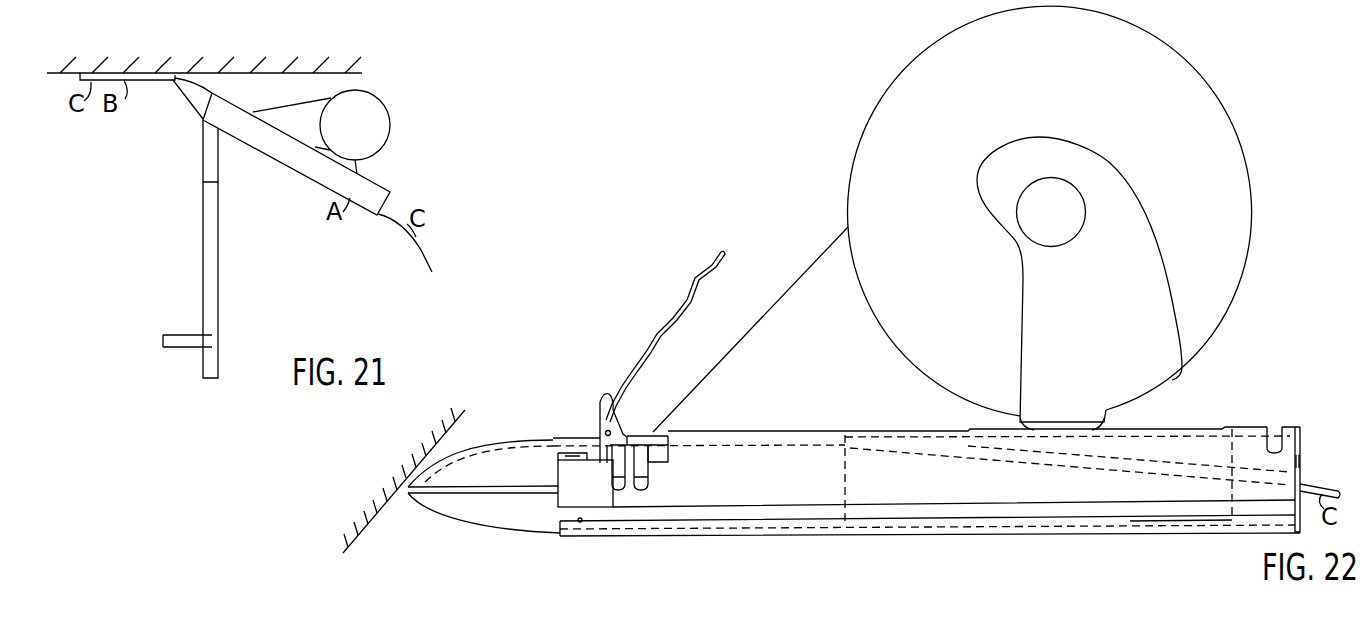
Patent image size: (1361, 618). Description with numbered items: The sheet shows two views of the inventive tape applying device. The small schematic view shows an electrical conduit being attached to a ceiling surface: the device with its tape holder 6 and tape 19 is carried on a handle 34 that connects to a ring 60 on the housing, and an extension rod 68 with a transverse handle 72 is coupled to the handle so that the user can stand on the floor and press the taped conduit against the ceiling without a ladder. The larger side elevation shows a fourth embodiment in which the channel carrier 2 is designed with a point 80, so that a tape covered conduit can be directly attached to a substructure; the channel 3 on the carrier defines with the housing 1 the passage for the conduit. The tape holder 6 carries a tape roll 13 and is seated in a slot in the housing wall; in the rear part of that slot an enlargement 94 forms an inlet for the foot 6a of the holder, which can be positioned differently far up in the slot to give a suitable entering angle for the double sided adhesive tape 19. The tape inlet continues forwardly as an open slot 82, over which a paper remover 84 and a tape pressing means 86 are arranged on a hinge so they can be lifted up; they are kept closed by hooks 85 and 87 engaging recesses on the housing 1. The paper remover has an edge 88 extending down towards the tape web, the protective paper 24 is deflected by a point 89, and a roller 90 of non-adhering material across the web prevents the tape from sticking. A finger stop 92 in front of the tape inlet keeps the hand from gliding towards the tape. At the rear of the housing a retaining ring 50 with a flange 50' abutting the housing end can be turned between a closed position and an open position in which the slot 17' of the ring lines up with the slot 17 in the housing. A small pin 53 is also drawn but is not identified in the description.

In FIG. 21, the housing 1 is at (303, 173).
In FIG. 22, the housing 1 is at (1005, 545).
In FIG. 21, the channel carrier 2 is at (198, 116).
In FIG. 22, the channel carrier 2 is at (502, 442).
In FIG. 22, the channel 3 is at (487, 486).
In FIG. 21, the tape holder 6 is at (391, 120).
In FIG. 22, the tape holder 6 is at (1083, 153).
In FIG. 22, the foot of the tape holder 6a is at (1080, 422).
In FIG. 22, the tape roll 13 is at (1243, 156).
In FIG. 22, the release opening 17 is at (1181, 542).
In FIG. 22, the slot of the ring 17' is at (1319, 442).
In FIG. 21, the double sided adhesive tape 19 is at (292, 104).
In FIG. 22, the double sided adhesive tape 19 is at (829, 253).
In FIG. 22, the protective paper 24 is at (677, 310).
In FIG. 21, the handle 34 is at (203, 158).
In FIG. 22, the retaining ring 50 is at (1266, 419).
In FIG. 22, the flange 50' is at (1314, 453).
In FIG. 22, the pivot pin 53 is at (579, 523).
In FIG. 21, the ring 60 is at (220, 107).
In FIG. 21, the extension rod 68 is at (220, 250).
In FIG. 21, the transverse handle 72 is at (181, 336).
In FIG. 21, the point 80 is at (186, 100).
In FIG. 22, the point 80 is at (445, 537).
In FIG. 22, the open slot 82 is at (578, 455).
In FIG. 22, the paper remover 84 is at (597, 477).
In FIG. 22, the hook 85 is at (620, 492).
In FIG. 22, the tape pressing means 86 is at (638, 436).
In FIG. 22, the hook 87 is at (657, 490).
In FIG. 22, the edge 88 is at (625, 423).
In FIG. 22, the point 89 is at (601, 398).
In FIG. 22, the roller 90 is at (598, 437).
In FIG. 22, the finger stop 92 is at (730, 431).
In FIG. 22, the enlargement 94 is at (1182, 429).